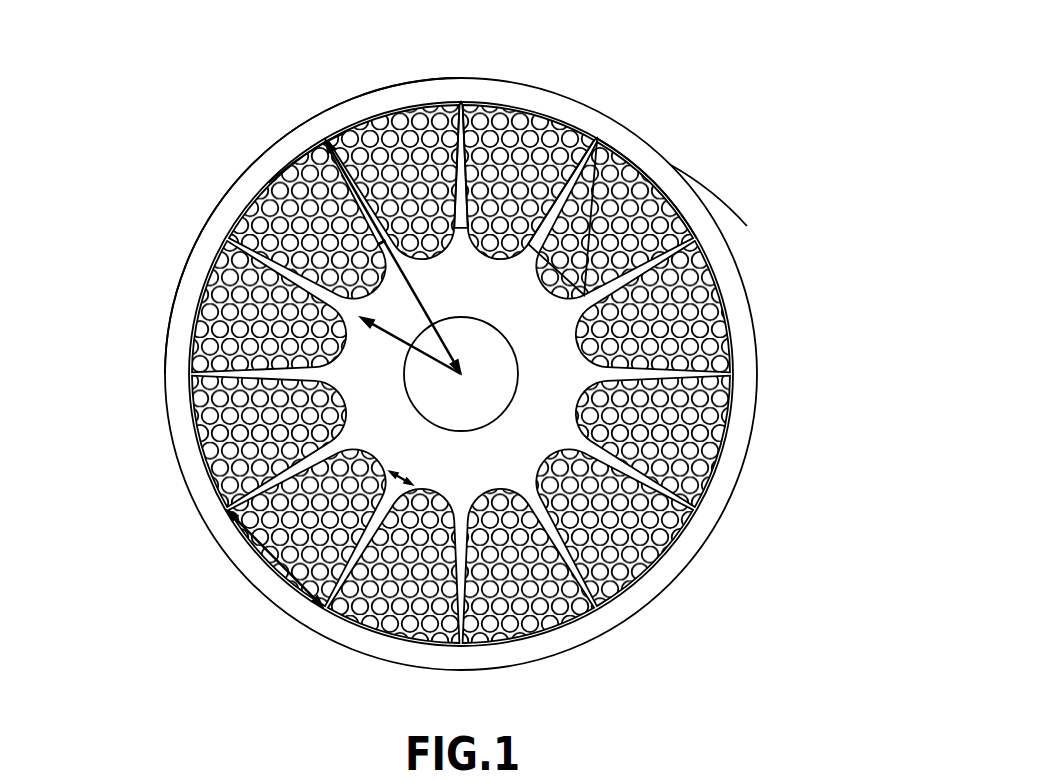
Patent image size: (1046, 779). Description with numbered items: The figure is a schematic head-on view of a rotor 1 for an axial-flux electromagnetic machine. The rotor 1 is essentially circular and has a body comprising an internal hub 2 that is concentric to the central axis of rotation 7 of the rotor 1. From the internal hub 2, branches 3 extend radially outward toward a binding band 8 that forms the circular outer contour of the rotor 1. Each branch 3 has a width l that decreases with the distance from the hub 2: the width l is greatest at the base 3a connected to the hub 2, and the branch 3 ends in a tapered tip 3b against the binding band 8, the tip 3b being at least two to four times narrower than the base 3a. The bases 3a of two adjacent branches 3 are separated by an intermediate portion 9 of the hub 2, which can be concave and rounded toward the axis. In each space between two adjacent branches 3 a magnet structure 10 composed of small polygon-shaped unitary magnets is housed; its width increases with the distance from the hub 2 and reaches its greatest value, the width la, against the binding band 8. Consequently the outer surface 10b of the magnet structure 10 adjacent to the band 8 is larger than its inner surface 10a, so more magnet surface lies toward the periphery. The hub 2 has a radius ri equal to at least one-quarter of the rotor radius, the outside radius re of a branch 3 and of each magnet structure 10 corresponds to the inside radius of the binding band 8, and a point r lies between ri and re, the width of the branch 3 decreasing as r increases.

The rotor 1 is at (658, 600).
The internal hub 2 is at (540, 412).
The branch 3 is at (634, 476).
The base 3a is at (440, 170).
The tapered tip 3b is at (462, 100).
The central axis of rotation 7 is at (192, 331).
The binding band 8 is at (237, 547).
The intermediate portion 9 is at (633, 162).
The magnet structure 10 is at (700, 220).
The inner surface 10a is at (603, 142).
The outer surface 10b is at (543, 114).
The point r is at (382, 242).
The radius of the hub ri is at (272, 180).
The radius of a branch re is at (335, 128).
The width of the magnet structure la is at (282, 568).
The width of the branch l is at (398, 482).